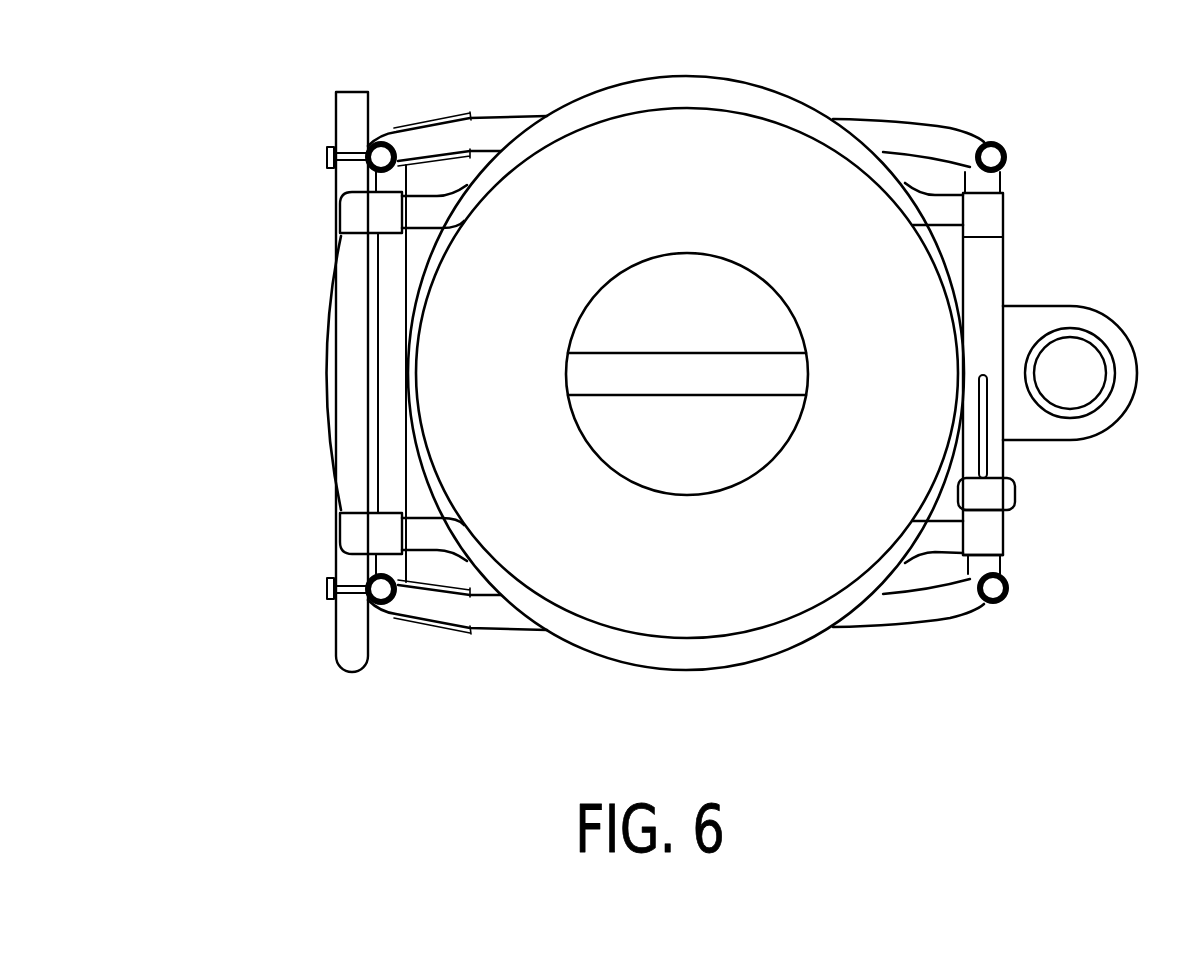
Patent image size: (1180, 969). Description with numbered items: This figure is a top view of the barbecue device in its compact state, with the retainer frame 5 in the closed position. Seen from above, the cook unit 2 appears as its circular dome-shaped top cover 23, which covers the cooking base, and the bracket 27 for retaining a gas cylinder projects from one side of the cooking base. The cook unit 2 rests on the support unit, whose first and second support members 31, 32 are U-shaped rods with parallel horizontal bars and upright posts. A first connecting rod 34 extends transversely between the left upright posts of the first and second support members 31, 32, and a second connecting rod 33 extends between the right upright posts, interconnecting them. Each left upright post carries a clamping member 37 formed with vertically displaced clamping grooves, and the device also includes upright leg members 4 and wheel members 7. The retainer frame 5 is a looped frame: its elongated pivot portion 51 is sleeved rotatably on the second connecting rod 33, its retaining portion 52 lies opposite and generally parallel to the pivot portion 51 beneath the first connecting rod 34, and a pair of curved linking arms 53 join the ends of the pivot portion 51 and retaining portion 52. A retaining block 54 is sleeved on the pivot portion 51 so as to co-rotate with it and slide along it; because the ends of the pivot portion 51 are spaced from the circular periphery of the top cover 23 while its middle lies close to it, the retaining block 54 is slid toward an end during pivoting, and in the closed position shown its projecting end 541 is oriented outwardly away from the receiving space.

The cook unit 2 is at (597, 583).
The top cover 23 is at (598, 153).
The curved linking arms 53 is at (688, 92).
The second support member 32 is at (883, 117).
The first support member 31 is at (898, 612).
The first connecting rod 34 is at (400, 258).
The clamping member 37 is at (335, 115).
The second connecting rod 33 is at (993, 182).
The wheel members 7 is at (327, 156).
The upright leg members 4 is at (348, 647).
The retaining portion 52 is at (345, 335).
The retainer frame 5 is at (1047, 374).
The pivot portion 51 is at (997, 292).
The retaining block 54 is at (988, 497).
The projecting end 541 is at (1017, 498).
The bracket 27 is at (1100, 422).